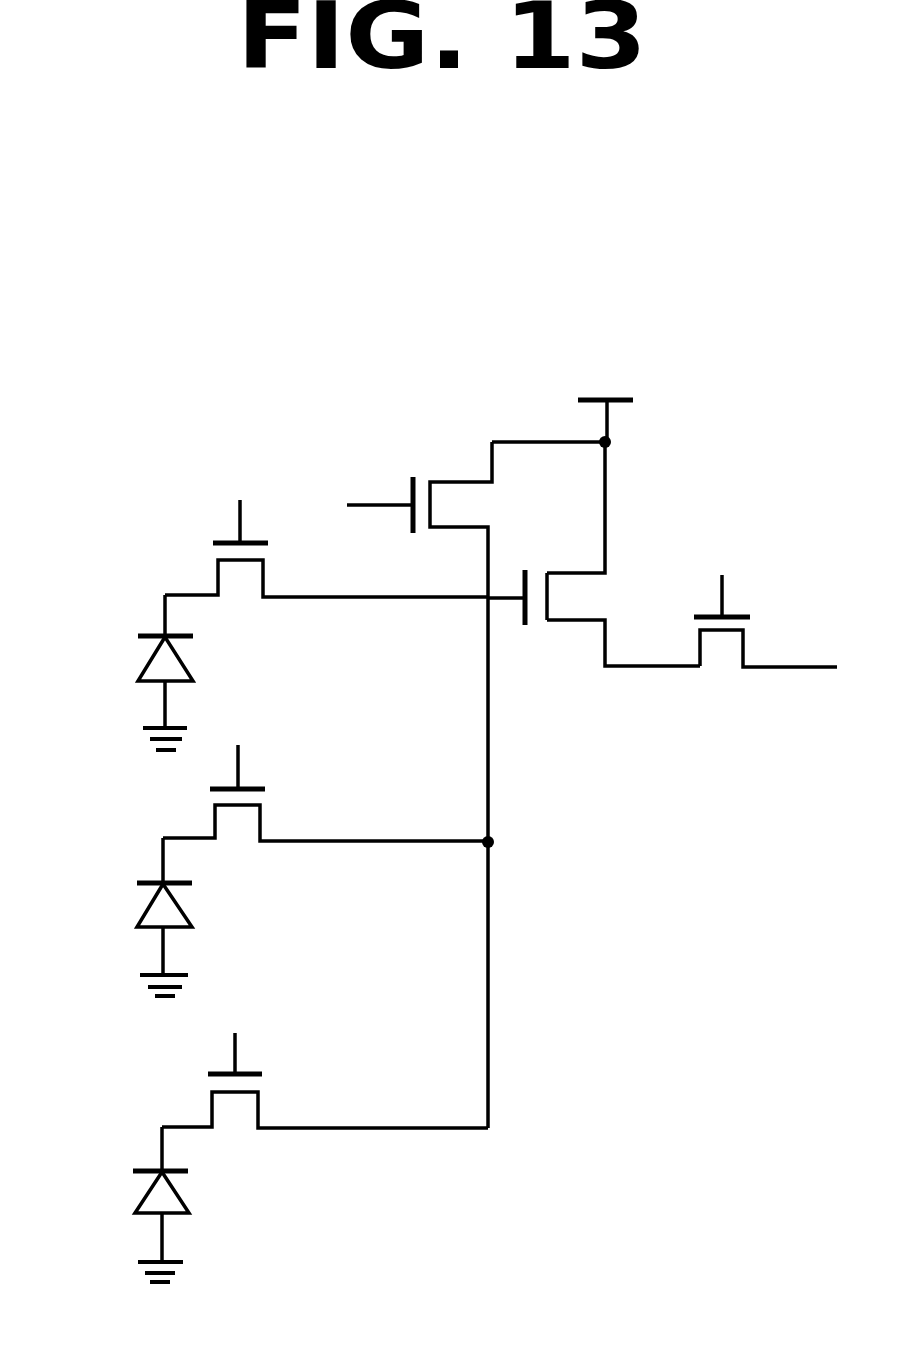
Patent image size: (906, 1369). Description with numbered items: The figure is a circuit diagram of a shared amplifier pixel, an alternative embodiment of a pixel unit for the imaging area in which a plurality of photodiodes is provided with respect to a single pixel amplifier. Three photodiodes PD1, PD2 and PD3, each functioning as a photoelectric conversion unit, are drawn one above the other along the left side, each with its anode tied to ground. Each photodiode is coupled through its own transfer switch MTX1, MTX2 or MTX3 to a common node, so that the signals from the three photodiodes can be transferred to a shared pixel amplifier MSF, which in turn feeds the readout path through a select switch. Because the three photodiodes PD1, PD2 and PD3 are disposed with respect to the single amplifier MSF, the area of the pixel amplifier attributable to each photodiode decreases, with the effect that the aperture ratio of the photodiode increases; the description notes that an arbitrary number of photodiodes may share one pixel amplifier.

The photodiode PD1 is at (115, 672).
The photodiode PD2 is at (114, 917).
The photodiode PD3 is at (112, 1204).
The transfer switch MTX1 is at (326, 592).
The transfer switch MTX2 is at (325, 839).
The transfer switch MTX3 is at (325, 1126).
The pixel amplifier MSF is at (594, 588).